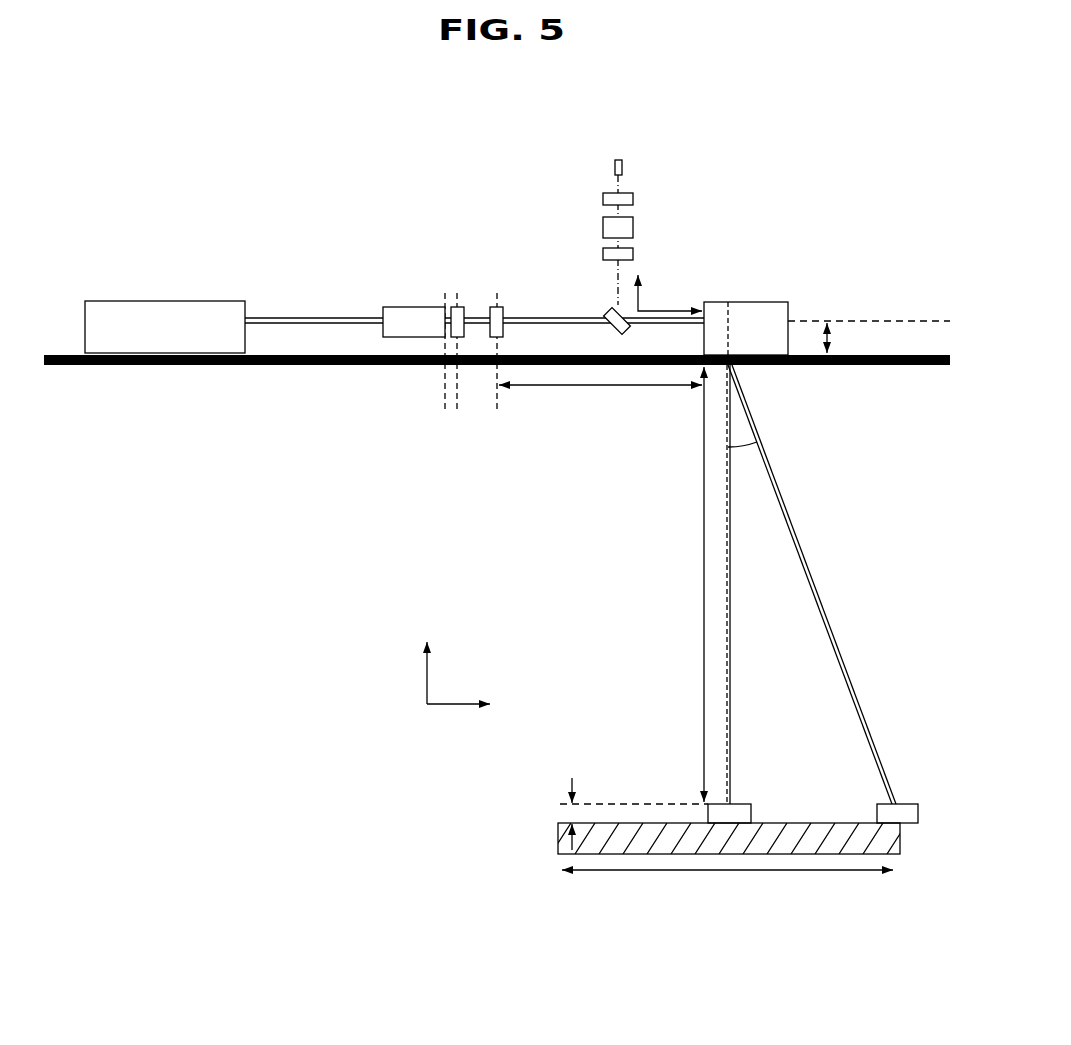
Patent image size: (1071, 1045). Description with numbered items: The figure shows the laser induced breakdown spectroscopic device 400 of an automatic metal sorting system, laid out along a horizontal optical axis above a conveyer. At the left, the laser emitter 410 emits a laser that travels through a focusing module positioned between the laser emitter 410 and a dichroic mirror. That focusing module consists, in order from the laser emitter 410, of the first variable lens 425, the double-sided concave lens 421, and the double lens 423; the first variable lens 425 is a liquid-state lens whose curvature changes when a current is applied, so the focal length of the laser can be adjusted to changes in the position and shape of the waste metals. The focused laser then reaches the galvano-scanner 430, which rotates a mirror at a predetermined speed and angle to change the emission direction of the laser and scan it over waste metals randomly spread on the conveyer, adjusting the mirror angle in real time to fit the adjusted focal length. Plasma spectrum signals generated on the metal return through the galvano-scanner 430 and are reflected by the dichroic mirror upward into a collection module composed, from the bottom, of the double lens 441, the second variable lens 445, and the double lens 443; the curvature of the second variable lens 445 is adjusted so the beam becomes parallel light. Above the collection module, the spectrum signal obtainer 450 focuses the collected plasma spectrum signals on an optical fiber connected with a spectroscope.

The laser induced breakdown spectroscopic device 400 is at (113, 143).
The laser emitter 410 is at (167, 301).
The double-sided concave lens 421 is at (464, 311).
The double lens 423 is at (503, 312).
The first variable lens 425 is at (396, 307).
The galvano-scanner 430 is at (761, 302).
The double lens 441 is at (633, 254).
The double lens 443 is at (633, 199).
The second variable lens 445 is at (633, 228).
The spectrum signal obtainer 450 is at (622, 168).